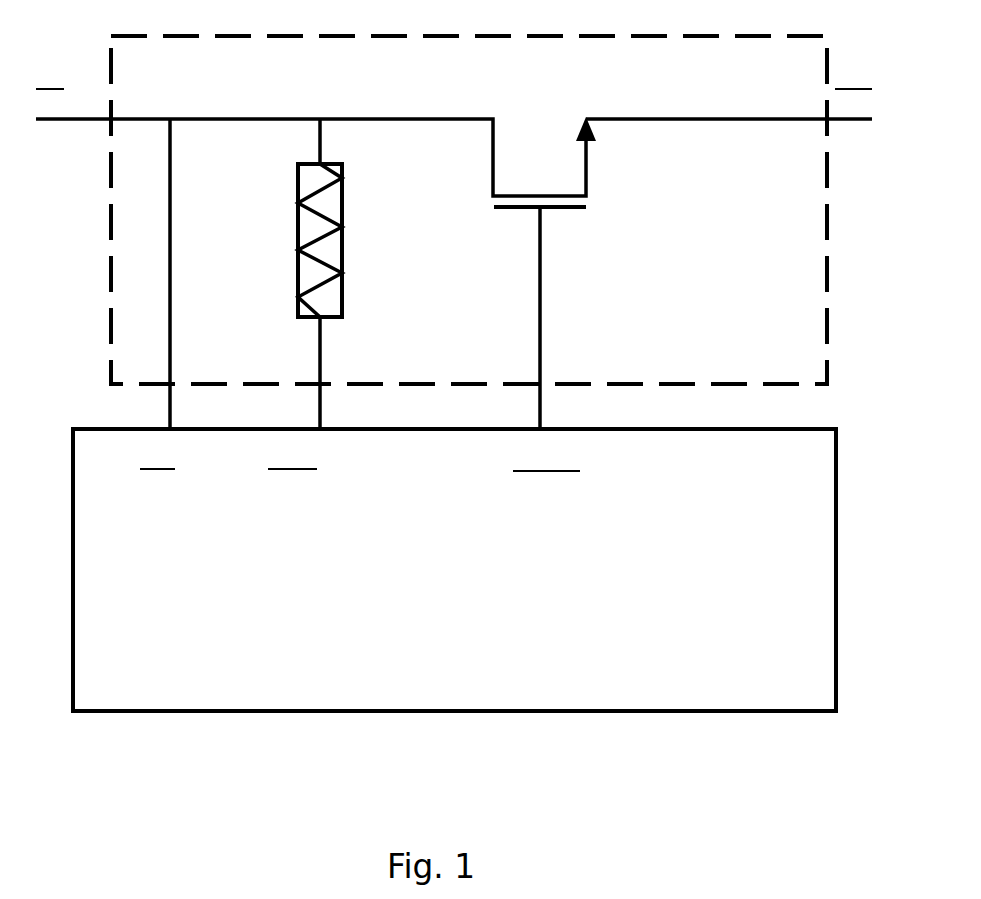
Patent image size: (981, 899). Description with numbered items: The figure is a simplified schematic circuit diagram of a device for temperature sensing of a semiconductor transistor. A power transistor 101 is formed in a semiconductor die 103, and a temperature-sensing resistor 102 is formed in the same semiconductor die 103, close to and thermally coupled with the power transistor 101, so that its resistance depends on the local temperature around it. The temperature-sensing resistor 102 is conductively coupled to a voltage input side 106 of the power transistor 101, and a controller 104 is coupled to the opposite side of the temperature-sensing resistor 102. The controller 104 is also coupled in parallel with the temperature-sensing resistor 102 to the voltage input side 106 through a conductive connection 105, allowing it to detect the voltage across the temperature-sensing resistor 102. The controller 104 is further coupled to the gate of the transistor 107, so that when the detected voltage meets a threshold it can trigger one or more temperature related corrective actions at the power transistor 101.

The power transistor 101 is at (587, 189).
The temperature-sensing resistor 102 is at (342, 292).
The semiconductor die 103 is at (800, 361).
The controller 104 is at (482, 624).
The conductive connection 105 is at (170, 228).
The voltage input side 106 is at (381, 119).
The gate of the transistor 107 is at (540, 330).